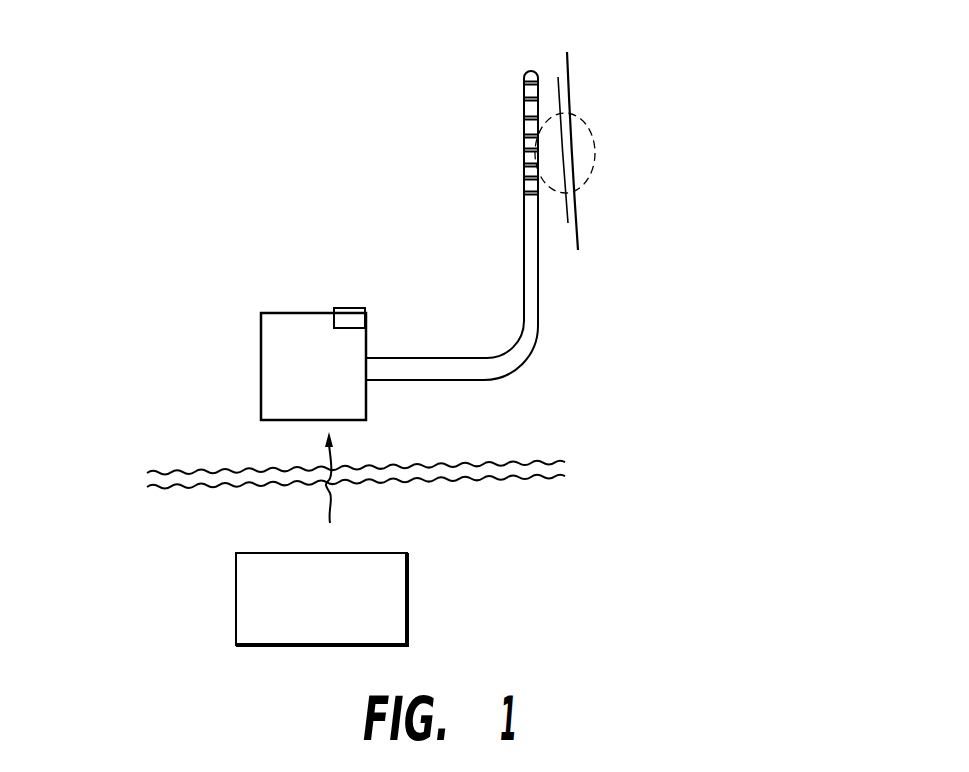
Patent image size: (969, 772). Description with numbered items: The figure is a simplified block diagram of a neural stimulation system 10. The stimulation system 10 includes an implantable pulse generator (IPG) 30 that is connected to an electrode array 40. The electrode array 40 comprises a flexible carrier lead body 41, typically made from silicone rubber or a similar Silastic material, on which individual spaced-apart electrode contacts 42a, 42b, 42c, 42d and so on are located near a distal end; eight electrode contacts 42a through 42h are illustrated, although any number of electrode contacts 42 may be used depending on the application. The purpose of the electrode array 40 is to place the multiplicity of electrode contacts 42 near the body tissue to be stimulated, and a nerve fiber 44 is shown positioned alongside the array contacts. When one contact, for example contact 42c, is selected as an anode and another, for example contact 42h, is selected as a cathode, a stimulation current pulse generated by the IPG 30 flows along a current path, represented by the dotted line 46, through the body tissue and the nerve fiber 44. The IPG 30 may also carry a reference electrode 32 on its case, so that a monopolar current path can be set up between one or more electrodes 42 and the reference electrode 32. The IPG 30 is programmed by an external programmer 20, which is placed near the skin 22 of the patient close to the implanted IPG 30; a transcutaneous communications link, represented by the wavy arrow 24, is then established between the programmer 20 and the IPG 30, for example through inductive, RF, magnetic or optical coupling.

The neural stimulation system 10 is at (150, 357).
The external programmer 20 is at (236, 590).
The skin 22 is at (515, 462).
The transcutaneous communications link 24 is at (325, 502).
The implantable pulse generator 30 is at (285, 312).
The reference electrode 32 is at (345, 316).
The electrode array 40 is at (452, 256).
The flexible carrier lead body 41 is at (441, 381).
The electrode contacts 42 is at (408, 108).
The electrode contact 42a is at (527, 83).
The electrode contact 42b is at (527, 102).
The electrode contact 42c is at (527, 117).
The electrode contact 42d is at (527, 135).
The electrode contact 42h is at (527, 195).
The nerve fiber 44 is at (568, 84).
The current path 46 is at (592, 143).